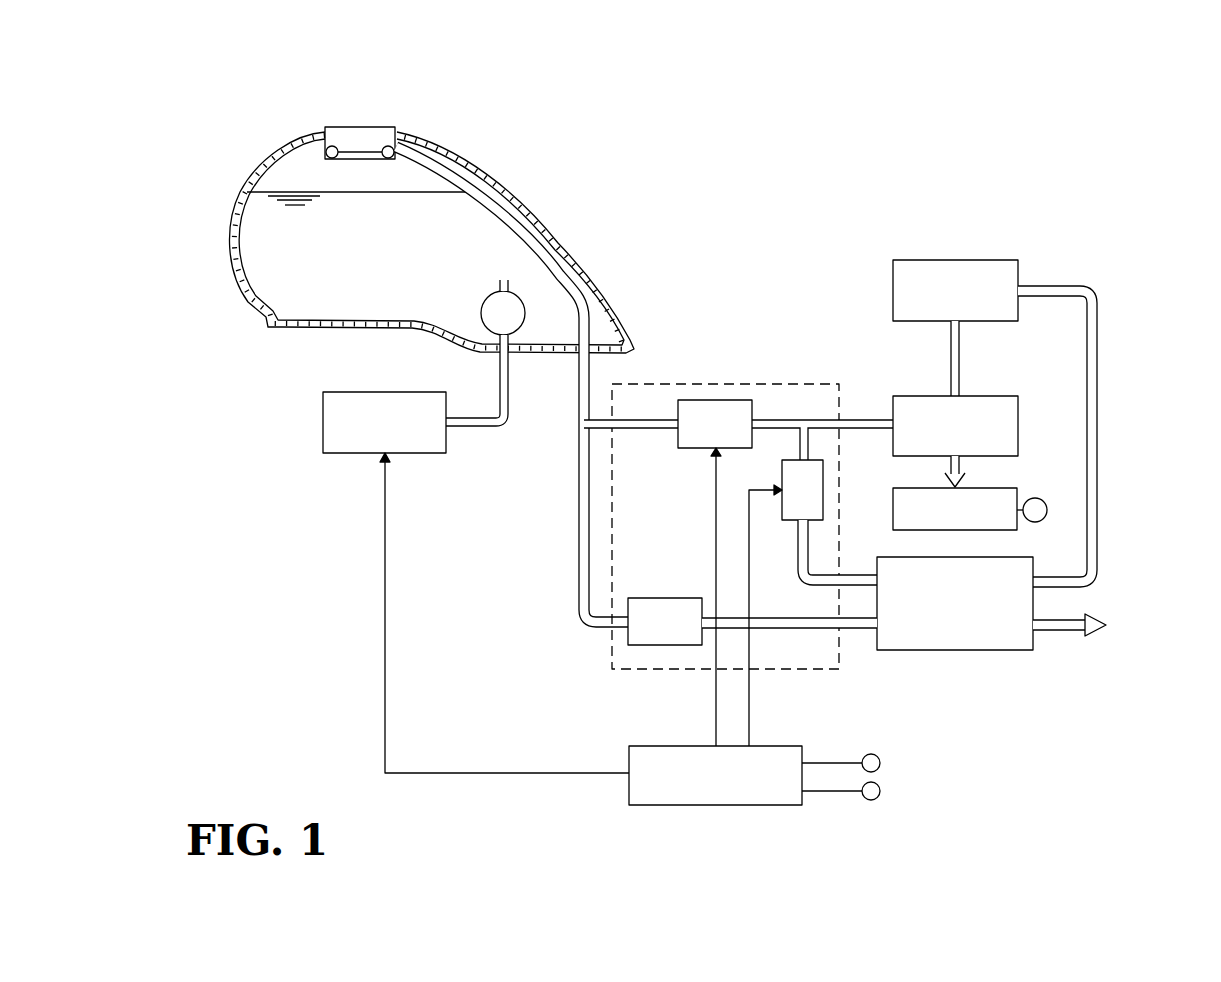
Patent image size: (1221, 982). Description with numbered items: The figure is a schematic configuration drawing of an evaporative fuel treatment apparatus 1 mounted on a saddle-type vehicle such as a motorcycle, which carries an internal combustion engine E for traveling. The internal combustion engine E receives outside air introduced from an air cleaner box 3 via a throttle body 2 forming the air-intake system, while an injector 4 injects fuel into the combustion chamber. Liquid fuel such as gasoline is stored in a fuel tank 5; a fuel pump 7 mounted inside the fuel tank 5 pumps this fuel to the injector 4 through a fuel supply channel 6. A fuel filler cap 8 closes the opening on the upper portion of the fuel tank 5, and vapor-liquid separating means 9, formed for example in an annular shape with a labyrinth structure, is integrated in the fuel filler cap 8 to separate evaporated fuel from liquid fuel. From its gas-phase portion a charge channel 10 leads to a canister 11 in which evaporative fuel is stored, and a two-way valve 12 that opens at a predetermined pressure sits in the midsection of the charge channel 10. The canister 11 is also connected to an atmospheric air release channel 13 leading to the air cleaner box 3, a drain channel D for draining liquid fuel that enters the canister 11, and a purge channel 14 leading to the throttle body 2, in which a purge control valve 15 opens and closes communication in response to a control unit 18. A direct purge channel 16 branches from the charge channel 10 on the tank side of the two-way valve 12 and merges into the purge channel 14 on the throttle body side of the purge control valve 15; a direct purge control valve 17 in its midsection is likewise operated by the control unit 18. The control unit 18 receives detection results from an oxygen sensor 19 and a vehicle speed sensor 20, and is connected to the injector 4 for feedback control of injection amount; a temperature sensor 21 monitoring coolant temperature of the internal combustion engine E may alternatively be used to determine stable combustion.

The evaporative fuel treatment apparatus 1 is at (832, 135).
The throttle body 2 is at (985, 396).
The air cleaner box 3 is at (985, 260).
The injector 4 is at (323, 425).
The fuel tank 5 is at (473, 163).
The fuel supply channel 6 is at (470, 430).
The fuel pump 7 is at (481, 316).
The fuel filler cap 8 is at (340, 127).
The vapor-liquid separating means 9 is at (363, 150).
The charge channel 10 is at (592, 330).
The canister 11 is at (985, 652).
The two-way valve 12 is at (652, 645).
The atmospheric air release channel 13 is at (1098, 428).
The purge channel 14 is at (852, 575).
The purge control valve 15 is at (823, 484).
The direct purge channel 16 is at (658, 418).
The direct purge control valve 17 is at (735, 400).
The control unit 18 is at (714, 805).
The O2 sensor 19 is at (880, 763).
The vehicle speed sensor 20 is at (880, 791).
The temperature sensor 21 is at (1042, 522).
The internal combustion engine E is at (1105, 483).
The drain channel D is at (1062, 640).